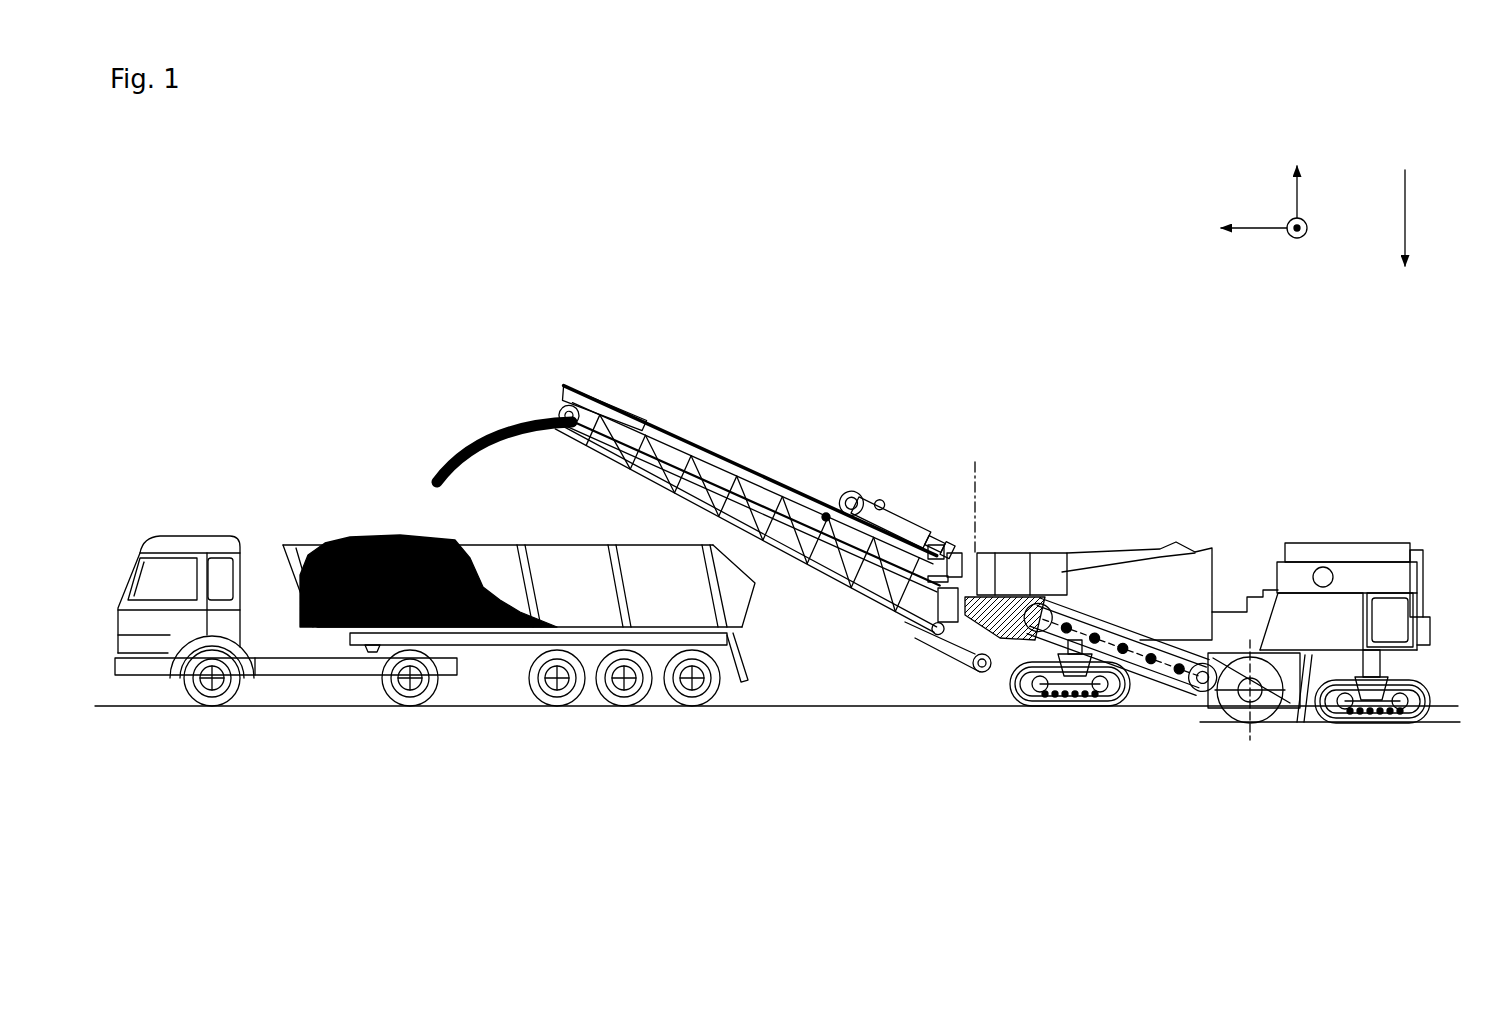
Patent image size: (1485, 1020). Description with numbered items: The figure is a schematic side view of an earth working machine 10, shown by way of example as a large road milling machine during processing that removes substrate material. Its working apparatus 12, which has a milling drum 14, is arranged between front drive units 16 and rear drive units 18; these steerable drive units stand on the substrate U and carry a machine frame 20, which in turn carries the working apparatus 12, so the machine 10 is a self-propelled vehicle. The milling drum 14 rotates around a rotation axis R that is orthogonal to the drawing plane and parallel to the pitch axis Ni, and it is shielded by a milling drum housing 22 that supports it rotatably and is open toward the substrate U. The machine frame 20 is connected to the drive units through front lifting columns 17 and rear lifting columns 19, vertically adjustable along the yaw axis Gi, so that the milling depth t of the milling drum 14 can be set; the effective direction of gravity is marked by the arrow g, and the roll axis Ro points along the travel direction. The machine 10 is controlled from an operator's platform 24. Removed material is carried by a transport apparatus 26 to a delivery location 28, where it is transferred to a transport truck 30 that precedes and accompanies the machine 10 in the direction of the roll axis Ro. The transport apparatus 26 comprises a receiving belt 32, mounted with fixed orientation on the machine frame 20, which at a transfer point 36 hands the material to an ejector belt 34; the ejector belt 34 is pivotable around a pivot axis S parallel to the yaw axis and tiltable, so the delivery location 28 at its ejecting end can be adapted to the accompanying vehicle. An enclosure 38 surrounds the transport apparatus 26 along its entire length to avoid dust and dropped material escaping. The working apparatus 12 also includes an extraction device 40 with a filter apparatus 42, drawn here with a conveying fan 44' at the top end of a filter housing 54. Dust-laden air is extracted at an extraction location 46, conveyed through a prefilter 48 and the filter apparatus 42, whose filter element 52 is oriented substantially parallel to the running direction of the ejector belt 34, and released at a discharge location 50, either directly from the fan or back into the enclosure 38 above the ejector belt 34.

The earth working machine 10 is at (1042, 285).
The working apparatus 12 is at (1235, 726).
The milling drum 14 is at (1238, 714).
The front drive units 16 is at (1044, 708).
The front lifting columns 17 is at (1035, 652).
The rear drive units 18 is at (1384, 728).
The rear lifting columns 19 is at (1383, 664).
The machine frame 20 is at (1158, 568).
The milling drum housing 22 is at (1300, 718).
The operator's platform 24 is at (1250, 567).
The transport apparatus 26 is at (714, 506).
The delivery location 28 is at (570, 406).
The transport truck 30 is at (329, 494).
The receiving belt 32 is at (1101, 576).
The ejector belt 34 is at (742, 463).
The transfer point 36 is at (1000, 578).
The enclosure 38 is at (683, 440).
The extraction device 40 is at (887, 474).
The filter apparatus 42 is at (898, 532).
The conveying fan 44' is at (846, 475).
The extraction location 46 is at (1046, 588).
The prefilter 48 is at (945, 622).
The discharge location 50 is at (824, 515).
The filter element 52 is at (930, 568).
The filter housing 54 is at (925, 548).
The pivot axis S is at (972, 482).
The substrate U is at (801, 700).
The rotation axis R is at (1230, 714).
The milling depth t is at (1258, 718).
The yaw axis Gi is at (1297, 206).
The pitch axis Ni is at (1304, 236).
The roll axis Ro is at (1258, 229).
The arrow g is at (1405, 192).